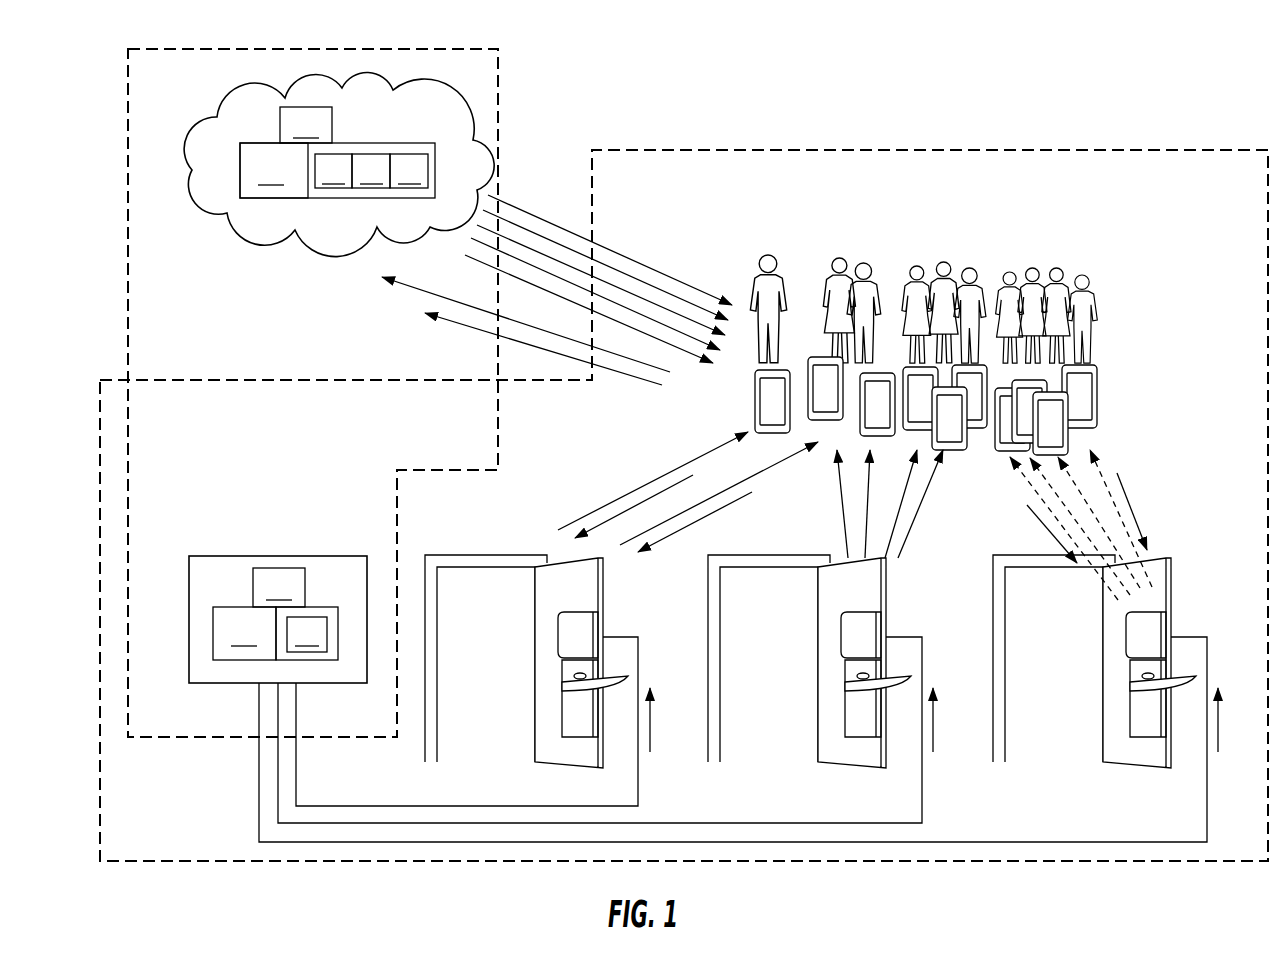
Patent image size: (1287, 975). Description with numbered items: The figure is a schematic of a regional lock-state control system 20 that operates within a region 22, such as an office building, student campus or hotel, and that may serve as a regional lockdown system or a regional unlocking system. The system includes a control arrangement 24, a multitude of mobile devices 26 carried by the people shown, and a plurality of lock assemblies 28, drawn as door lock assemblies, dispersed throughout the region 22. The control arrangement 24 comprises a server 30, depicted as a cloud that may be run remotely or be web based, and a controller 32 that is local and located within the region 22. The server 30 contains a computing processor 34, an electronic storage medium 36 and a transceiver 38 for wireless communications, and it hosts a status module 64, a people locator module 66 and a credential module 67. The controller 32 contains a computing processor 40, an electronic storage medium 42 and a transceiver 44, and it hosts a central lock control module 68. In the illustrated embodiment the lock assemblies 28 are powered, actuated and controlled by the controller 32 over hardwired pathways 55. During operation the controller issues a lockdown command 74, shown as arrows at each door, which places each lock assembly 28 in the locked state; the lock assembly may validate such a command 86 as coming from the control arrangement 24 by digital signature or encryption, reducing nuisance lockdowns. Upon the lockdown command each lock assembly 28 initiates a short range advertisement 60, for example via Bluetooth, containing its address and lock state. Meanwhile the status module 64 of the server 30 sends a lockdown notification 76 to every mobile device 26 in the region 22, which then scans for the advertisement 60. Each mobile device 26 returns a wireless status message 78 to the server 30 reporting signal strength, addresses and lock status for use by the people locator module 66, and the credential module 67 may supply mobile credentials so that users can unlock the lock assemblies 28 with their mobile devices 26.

The regional lock-state control system 20 is at (1162, 67).
The region 22 is at (875, 150).
The control arrangement 24 is at (505, 97).
The mobile devices 26 is at (757, 407).
The lock assemblies 28 is at (598, 628).
The server 30 is at (428, 72).
The controller 32 is at (203, 553).
The computing processor 34 is at (274, 170).
The electronic storage medium 36 is at (337, 219).
The transceiver 38 is at (306, 125).
The computing processor 40 is at (244, 633).
The electronic storage medium 42 is at (324, 664).
The transceiver 44 is at (279, 587).
The hardwired pathways 55 is at (259, 775).
The advertisement 60 is at (620, 495).
The status module 64 is at (333, 171).
The people locator module 66 is at (371, 171).
The credential module 67 is at (409, 171).
The central lock control module 68 is at (312, 660).
The lockdown command 74 is at (651, 728).
The lockdown notification 76 is at (685, 298).
The status message 78 is at (637, 363).
The command 86 is at (708, 513).